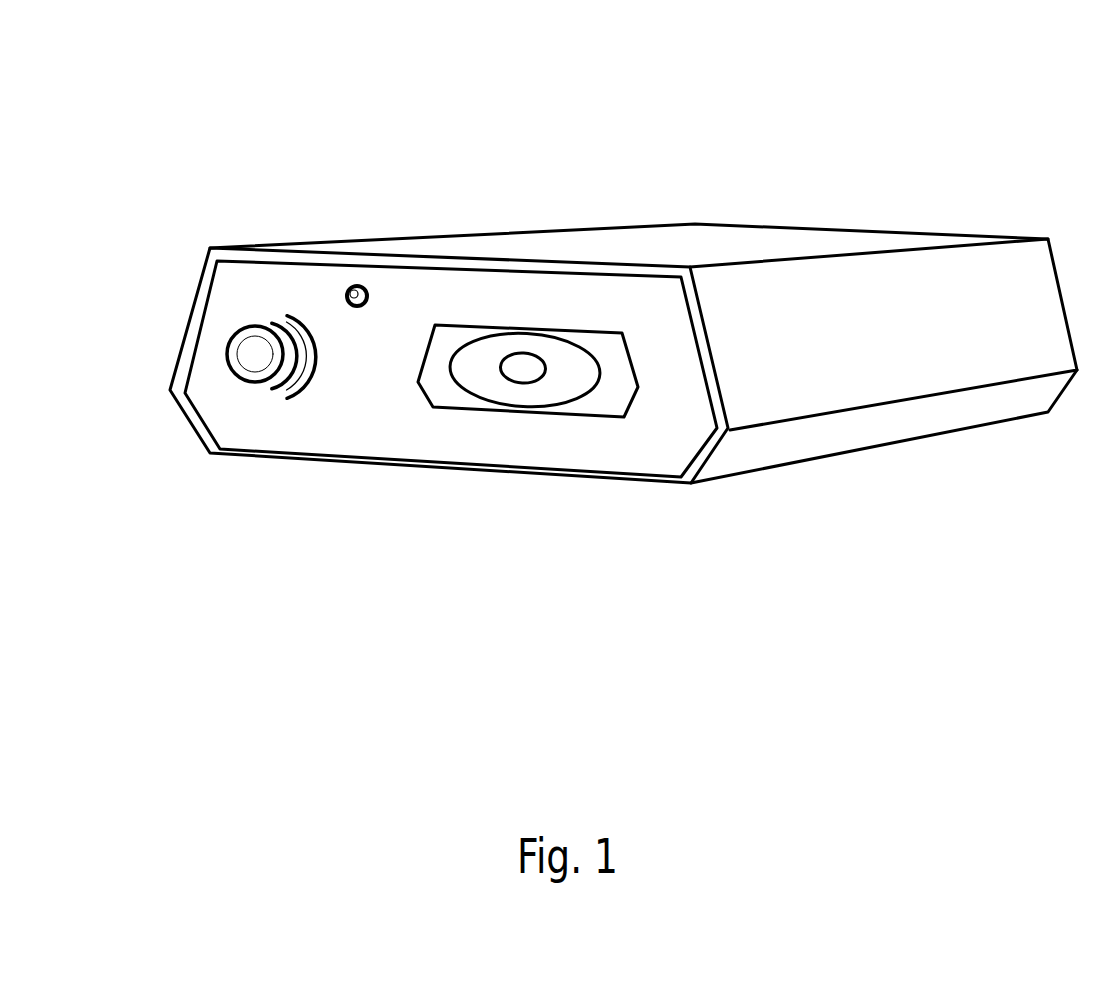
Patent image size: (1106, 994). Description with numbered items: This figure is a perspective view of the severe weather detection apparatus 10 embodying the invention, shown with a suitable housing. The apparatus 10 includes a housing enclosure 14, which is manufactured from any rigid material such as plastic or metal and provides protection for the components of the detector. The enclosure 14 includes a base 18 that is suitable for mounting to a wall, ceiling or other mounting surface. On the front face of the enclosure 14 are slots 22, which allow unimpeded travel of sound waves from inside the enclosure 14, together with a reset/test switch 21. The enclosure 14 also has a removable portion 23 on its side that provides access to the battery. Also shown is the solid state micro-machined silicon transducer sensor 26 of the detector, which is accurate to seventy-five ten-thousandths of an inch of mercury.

The severe weather detection apparatus 10 is at (509, 112).
The housing enclosure 14 is at (697, 243).
The base 18 is at (312, 457).
The reset/test switch 21 is at (353, 286).
The slots 22 is at (605, 395).
The removable portion 23 is at (858, 310).
The solid state micro-machined silicon transducer sensor 26 is at (253, 350).